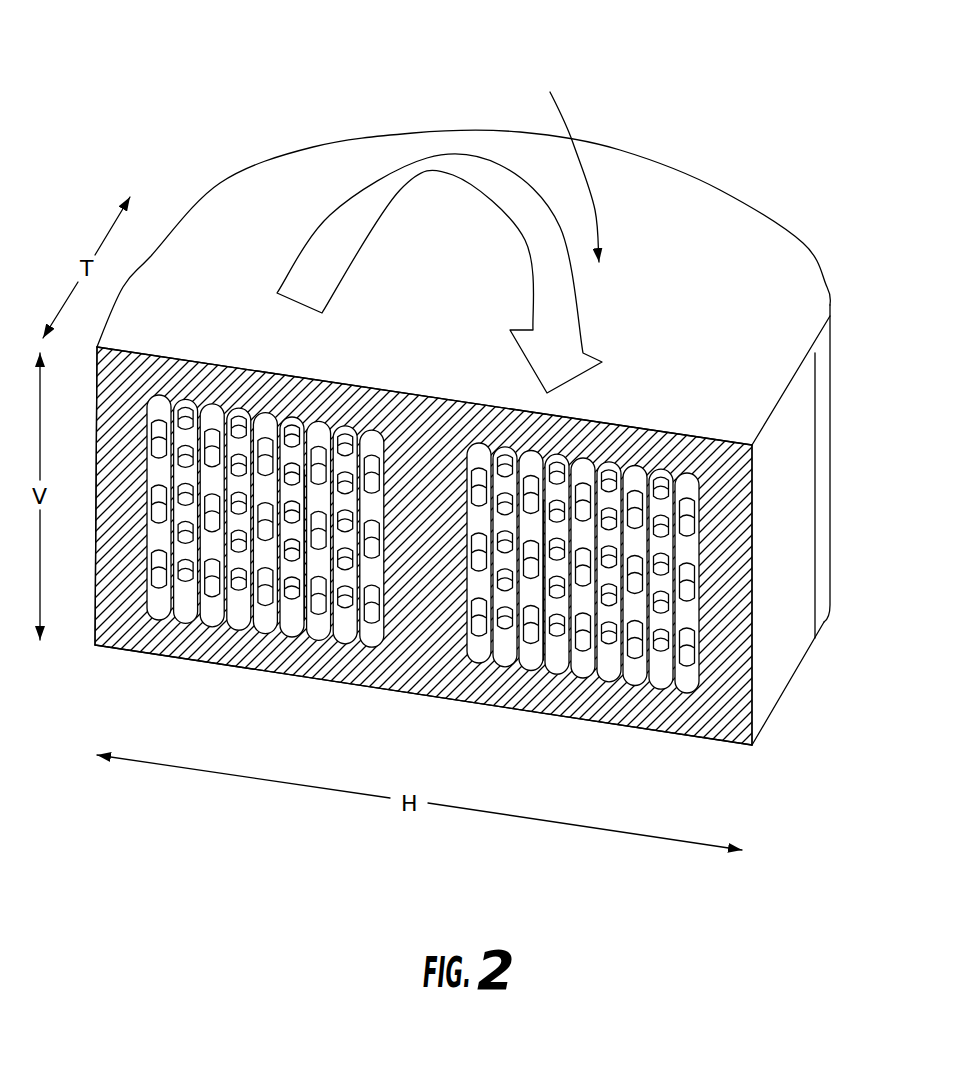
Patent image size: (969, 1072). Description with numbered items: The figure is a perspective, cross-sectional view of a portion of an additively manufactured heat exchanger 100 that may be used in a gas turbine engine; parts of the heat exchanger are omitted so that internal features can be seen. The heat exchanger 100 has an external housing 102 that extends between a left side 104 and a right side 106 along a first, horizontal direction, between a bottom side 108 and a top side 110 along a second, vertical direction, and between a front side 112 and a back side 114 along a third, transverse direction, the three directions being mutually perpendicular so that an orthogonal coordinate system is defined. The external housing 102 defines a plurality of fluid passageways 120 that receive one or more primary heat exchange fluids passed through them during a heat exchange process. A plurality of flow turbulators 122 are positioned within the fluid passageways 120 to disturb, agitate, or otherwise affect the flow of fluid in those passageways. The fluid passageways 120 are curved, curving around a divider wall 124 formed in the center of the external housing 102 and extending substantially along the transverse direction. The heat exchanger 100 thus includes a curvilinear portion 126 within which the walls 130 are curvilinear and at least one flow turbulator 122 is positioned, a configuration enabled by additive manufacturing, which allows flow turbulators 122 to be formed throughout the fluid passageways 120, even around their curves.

The additively manufactured heat exchanger 100 is at (777, 103).
The external housing 102 is at (812, 298).
The left side 104 is at (117, 405).
The right side 106 is at (735, 525).
The bottom side 108 is at (158, 638).
The top side 110 is at (333, 403).
The front side 112 is at (718, 750).
The back side 114 is at (617, 147).
The fluid passageways 120 is at (690, 480).
The flow turbulators 122 is at (247, 440).
The divider wall 124 is at (427, 465).
The curvilinear portion 126 is at (566, 161).
The walls 130 is at (297, 590).